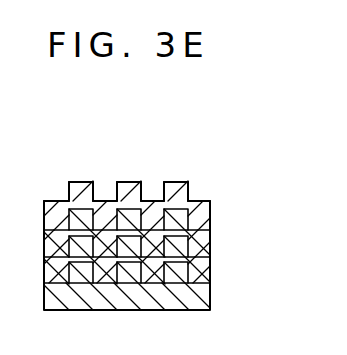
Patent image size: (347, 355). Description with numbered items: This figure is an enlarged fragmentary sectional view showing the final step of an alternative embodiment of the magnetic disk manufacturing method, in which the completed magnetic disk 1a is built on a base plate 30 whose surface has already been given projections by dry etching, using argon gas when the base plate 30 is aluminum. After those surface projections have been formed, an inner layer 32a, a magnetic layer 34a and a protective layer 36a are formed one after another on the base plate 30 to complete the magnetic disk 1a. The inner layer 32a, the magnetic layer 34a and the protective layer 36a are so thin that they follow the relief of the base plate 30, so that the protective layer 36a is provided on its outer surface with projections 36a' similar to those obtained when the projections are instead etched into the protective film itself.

The magnetic disk 1a is at (47, 186).
The base plate 30 is at (210, 295).
The inner layer 32a is at (210, 267).
The magnetic layer 34a is at (210, 238).
The protective layer 36a is at (171, 208).
The projections 36a' is at (128, 154).